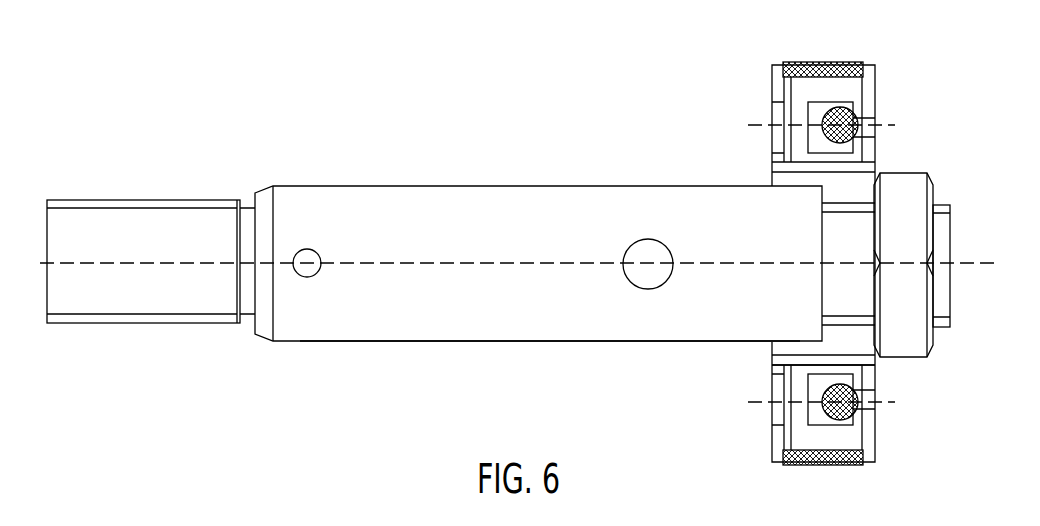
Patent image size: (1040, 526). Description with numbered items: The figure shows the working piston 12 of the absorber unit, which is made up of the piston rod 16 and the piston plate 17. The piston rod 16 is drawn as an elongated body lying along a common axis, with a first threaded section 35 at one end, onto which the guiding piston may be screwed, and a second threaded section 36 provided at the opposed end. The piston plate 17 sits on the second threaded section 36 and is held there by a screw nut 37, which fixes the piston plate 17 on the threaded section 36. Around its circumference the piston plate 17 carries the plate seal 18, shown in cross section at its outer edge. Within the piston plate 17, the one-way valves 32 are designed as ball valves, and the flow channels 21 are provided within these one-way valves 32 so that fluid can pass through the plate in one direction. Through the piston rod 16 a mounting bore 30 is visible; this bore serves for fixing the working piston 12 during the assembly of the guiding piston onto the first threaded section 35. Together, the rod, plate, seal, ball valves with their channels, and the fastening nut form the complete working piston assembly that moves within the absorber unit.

The working piston 12 is at (566, 186).
The piston rod 16 is at (457, 327).
The piston plate 17 is at (876, 83).
The plate seal 18 is at (815, 61).
The flow channel 21 is at (876, 357).
The mounting bore 30 is at (654, 252).
The one-way valve 32 is at (858, 126).
The first threaded section 35 is at (82, 215).
The second threaded section 36 is at (950, 210).
The screw nut 37 is at (905, 190).